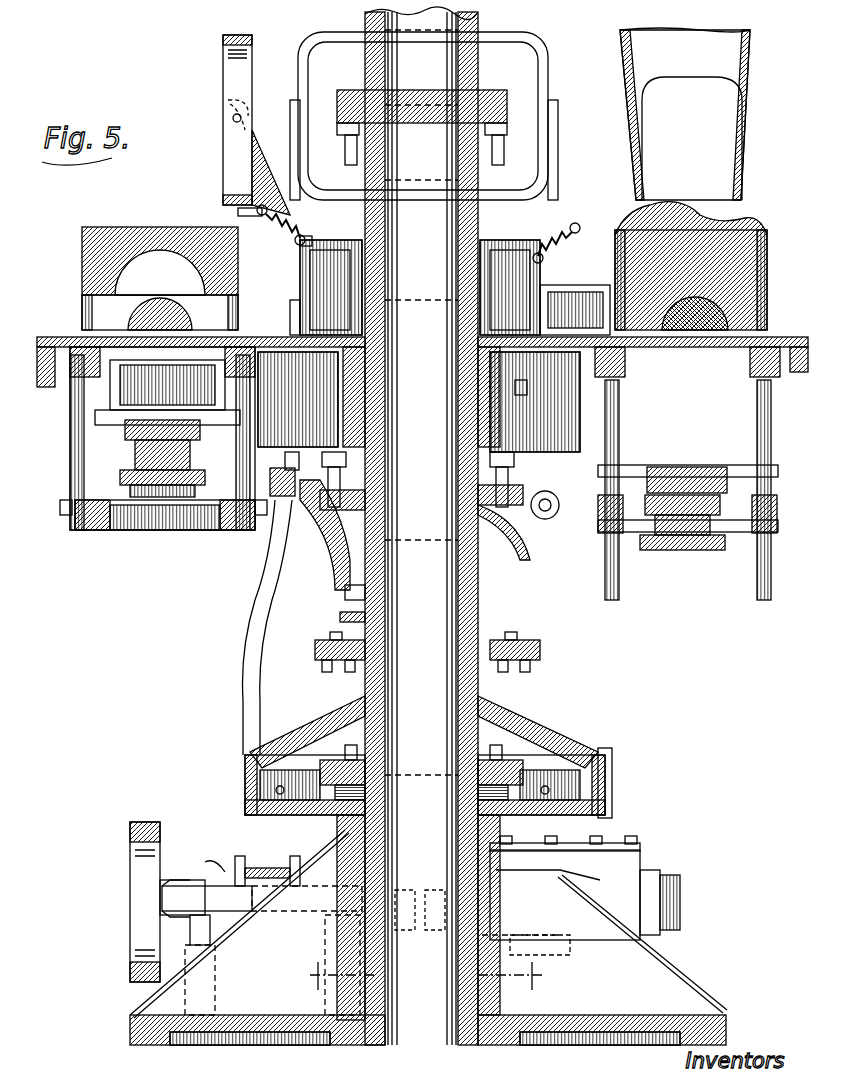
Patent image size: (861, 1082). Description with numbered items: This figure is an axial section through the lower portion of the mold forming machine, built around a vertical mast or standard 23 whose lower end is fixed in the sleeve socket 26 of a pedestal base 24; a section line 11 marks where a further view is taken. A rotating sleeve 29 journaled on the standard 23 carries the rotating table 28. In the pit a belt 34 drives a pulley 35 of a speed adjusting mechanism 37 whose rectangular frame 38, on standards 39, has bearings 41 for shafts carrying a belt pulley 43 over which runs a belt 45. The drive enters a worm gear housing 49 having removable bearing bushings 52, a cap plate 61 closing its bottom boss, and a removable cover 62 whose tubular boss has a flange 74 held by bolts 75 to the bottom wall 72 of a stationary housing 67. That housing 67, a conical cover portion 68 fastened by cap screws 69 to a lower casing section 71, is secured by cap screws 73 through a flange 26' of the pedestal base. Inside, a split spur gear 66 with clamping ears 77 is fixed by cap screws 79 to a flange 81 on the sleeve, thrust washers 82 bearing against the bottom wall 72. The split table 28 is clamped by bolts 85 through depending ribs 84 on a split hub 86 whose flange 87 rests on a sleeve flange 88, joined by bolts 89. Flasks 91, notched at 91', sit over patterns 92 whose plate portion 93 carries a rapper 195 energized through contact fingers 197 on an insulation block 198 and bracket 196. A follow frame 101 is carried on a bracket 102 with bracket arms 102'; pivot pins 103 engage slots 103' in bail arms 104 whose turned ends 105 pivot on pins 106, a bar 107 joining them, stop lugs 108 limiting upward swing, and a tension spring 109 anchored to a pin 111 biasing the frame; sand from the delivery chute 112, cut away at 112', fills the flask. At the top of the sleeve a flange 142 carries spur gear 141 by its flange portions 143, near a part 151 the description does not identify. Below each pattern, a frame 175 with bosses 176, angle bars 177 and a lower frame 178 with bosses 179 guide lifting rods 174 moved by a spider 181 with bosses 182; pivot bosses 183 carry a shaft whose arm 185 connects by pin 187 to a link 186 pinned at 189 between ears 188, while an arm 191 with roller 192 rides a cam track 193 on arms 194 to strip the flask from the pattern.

The section line 11 is at (417, 976).
The vertical mast or standard 23 is at (460, 1046).
The pedestal base 24 is at (130, 1016).
The vertical sleeve socket 26 is at (366, 952).
The flange 26' is at (393, 917).
The rotating table 28 is at (38, 336).
The rotating sleeve 29 is at (365, 620).
The belt 34 is at (138, 848).
The pulley 35 is at (130, 878).
The speed adjusting mechanism 37 is at (206, 850).
The rectangular frame 38 is at (208, 884).
The standards 39 is at (195, 965).
The bearings 41 is at (175, 900).
The belt pulley 43 is at (240, 856).
The belt 45 is at (267, 862).
The worm gear housing 49 is at (640, 935).
The removable bearing bushings 52 is at (680, 895).
The removable cap plate 61 is at (561, 959).
The removable cover 62 is at (642, 852).
The spur gear 66 is at (612, 778).
The stationary housing 67 is at (612, 762).
The conical cover portion 68 is at (600, 750).
The cap screws 69 is at (608, 750).
The lower casing section 71 is at (612, 798).
The bottom wall 72 is at (612, 812).
The cap screws 73 is at (339, 860).
The flange 74 is at (535, 850).
The screws or bolts 75 is at (575, 855).
The apertured lugs or ears 77 is at (548, 760).
The bolts or cap screws 79 is at (350, 745).
The flange 81 is at (350, 772).
The thrust washers 82 is at (365, 790).
The depending ribs 84 is at (520, 440).
The bolts 85 is at (478, 400).
The split hub 86 is at (500, 378).
The flange 87 is at (522, 490).
The flange 88 is at (505, 540).
The bolts 89 is at (335, 452).
The flask 91 is at (421, 281).
The notch 91' is at (426, 261).
The pattern 92 is at (140, 300).
The plate portion 93 is at (200, 360).
The follow frame 101 is at (252, 38).
The bracket 102 is at (420, 254).
The bracket arms 102' is at (580, 180).
The pivot pins 103 is at (466, 172).
The slots 103' is at (205, 108).
The bail arms 104 is at (250, 158).
The laterally turned ends 105 is at (258, 208).
The pivot pins 106 is at (285, 238).
The bar or pin 107 is at (255, 213).
The stop lugs 108 is at (250, 212).
The tension spring 109 is at (300, 262).
The pin 111 is at (452, 290).
The delivery chute 112 is at (707, 114).
The cut-away wall portion 112' is at (692, 138).
The spur gear 141 is at (352, 165).
The flange 142 is at (508, 105).
The flange portions 143 is at (512, 141).
The shaft top 151 is at (365, 32).
The rods 174 is at (250, 460).
The rectangular plate or frame 175 is at (290, 300).
The apertured bosses 176 is at (85, 380).
The angle plates or bars 177 is at (782, 424).
The lower plate or frame 178 is at (225, 530).
The apertured bosses 179 is at (78, 532).
The spider 181 is at (715, 470).
The bosses 182 is at (245, 415).
The pivot bosses 183 is at (95, 525).
The arm 185 is at (145, 500).
The link 186 is at (178, 500).
The pivot pin 187 is at (150, 500).
The pivot ears 188 is at (655, 650).
The pivot pin 189 is at (110, 450).
The arm 191 is at (278, 500).
The roller 192 is at (300, 452).
The arcuate cam track 193 is at (345, 638).
The arms 194 is at (243, 700).
The vibrator or rapper 195 is at (560, 305).
The brackets 196 is at (350, 672).
The contact fingers 197 is at (315, 655).
The block of insulation 198 is at (330, 668).